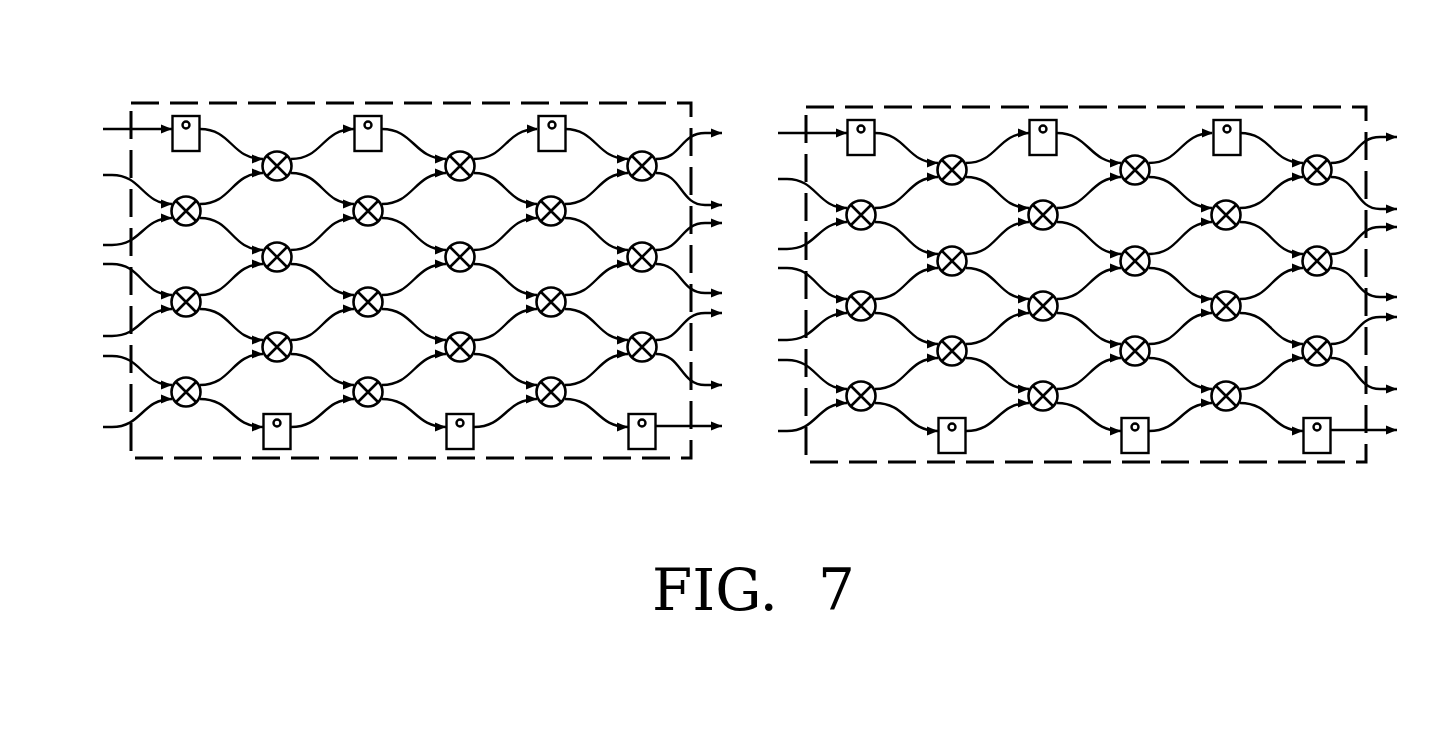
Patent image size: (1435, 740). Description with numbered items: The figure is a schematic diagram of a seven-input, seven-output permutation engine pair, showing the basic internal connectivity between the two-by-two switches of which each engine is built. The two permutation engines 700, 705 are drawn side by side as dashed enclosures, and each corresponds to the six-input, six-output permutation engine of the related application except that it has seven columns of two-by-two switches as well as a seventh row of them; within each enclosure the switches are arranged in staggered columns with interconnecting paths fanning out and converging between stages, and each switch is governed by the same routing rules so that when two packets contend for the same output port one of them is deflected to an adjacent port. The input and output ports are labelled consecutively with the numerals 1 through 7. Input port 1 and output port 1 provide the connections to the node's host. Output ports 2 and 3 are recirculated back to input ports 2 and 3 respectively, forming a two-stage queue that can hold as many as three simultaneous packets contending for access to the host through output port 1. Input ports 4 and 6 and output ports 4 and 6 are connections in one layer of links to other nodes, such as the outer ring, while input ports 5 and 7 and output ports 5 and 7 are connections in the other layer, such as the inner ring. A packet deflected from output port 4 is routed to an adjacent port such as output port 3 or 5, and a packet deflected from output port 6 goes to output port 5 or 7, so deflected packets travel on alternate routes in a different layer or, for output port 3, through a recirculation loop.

The permutation engine 700 is at (538, 103).
The permutation engine 705 is at (960, 107).
The port 1 is at (752, 280).
The port 2 is at (752, 281).
The port 3 is at (752, 281).
The port 4 is at (752, 284).
The port 5 is at (752, 277).
The port 6 is at (752, 285).
The port 7 is at (752, 282).